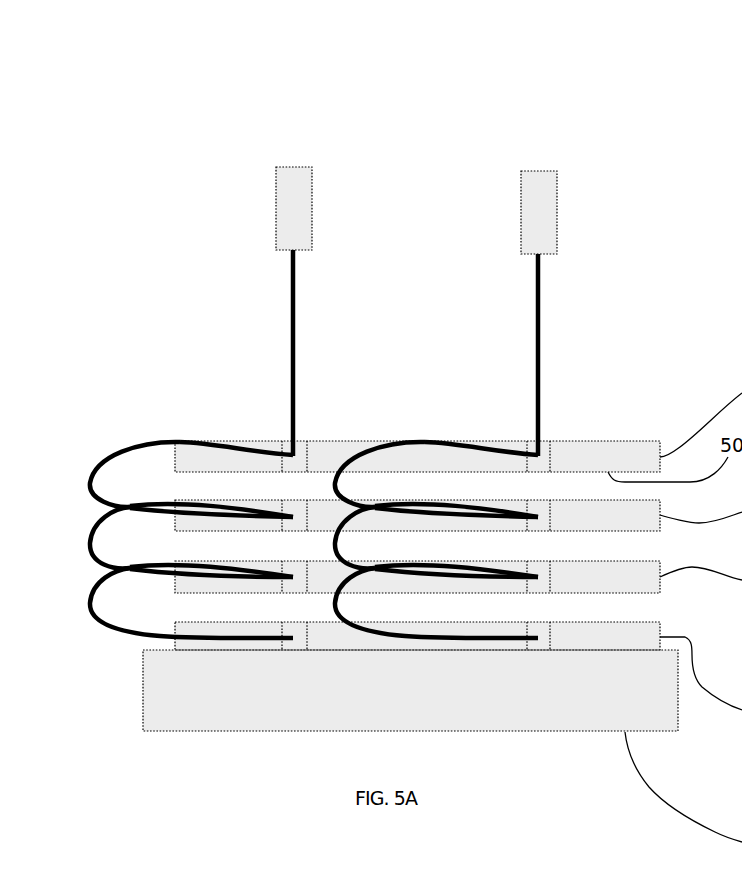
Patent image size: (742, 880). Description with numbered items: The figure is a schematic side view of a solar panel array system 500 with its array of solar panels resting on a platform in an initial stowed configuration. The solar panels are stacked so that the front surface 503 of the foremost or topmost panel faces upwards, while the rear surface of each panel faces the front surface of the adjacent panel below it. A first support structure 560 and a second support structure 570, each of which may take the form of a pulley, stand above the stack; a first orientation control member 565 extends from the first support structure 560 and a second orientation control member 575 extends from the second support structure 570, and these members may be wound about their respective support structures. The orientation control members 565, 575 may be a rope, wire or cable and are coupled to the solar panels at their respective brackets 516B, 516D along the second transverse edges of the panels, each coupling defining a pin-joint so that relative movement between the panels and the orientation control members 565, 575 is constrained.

The solar panel array system 500 is at (368, 142).
The front surface 503 is at (627, 440).
The bracket 516B is at (543, 456).
The bracket 516D is at (290, 446).
The first support structure 560 is at (538, 213).
The first orientation control member 565 is at (542, 339).
The second support structure 570 is at (293, 208).
The second orientation control member 575 is at (293, 338).